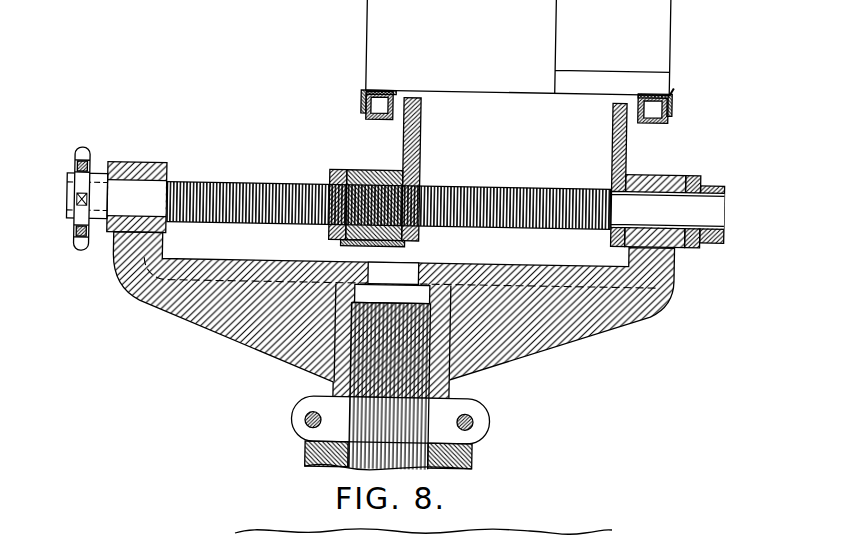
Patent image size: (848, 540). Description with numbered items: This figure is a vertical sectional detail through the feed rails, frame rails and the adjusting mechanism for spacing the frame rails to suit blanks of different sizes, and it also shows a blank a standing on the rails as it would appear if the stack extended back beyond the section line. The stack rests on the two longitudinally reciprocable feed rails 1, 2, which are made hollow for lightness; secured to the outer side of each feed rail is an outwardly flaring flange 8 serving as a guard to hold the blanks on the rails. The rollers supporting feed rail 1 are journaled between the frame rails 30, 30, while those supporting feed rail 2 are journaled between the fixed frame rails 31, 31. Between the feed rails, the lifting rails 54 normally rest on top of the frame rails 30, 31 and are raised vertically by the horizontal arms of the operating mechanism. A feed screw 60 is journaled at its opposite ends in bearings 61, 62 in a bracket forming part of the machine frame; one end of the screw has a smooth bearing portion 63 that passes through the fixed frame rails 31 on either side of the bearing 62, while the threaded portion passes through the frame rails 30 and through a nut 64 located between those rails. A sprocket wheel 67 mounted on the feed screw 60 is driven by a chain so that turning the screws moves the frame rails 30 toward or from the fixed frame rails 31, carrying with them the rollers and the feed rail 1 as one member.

The feed rail 1 is at (378, 122).
The feed rail 2 is at (656, 120).
The outwardly flaring flange 8 is at (360, 92).
The frame rail 30 is at (332, 174).
The frame rail 31 is at (700, 175).
The lifting rail 54 is at (418, 122).
The feed screw 60 is at (490, 221).
The bearing 61 is at (138, 177).
The bearing 62 is at (662, 174).
The smooth bearing portion 63 is at (714, 202).
The nut 64 is at (346, 244).
The sprocket wheel 67 is at (80, 244).
The blank a is at (518, 80).